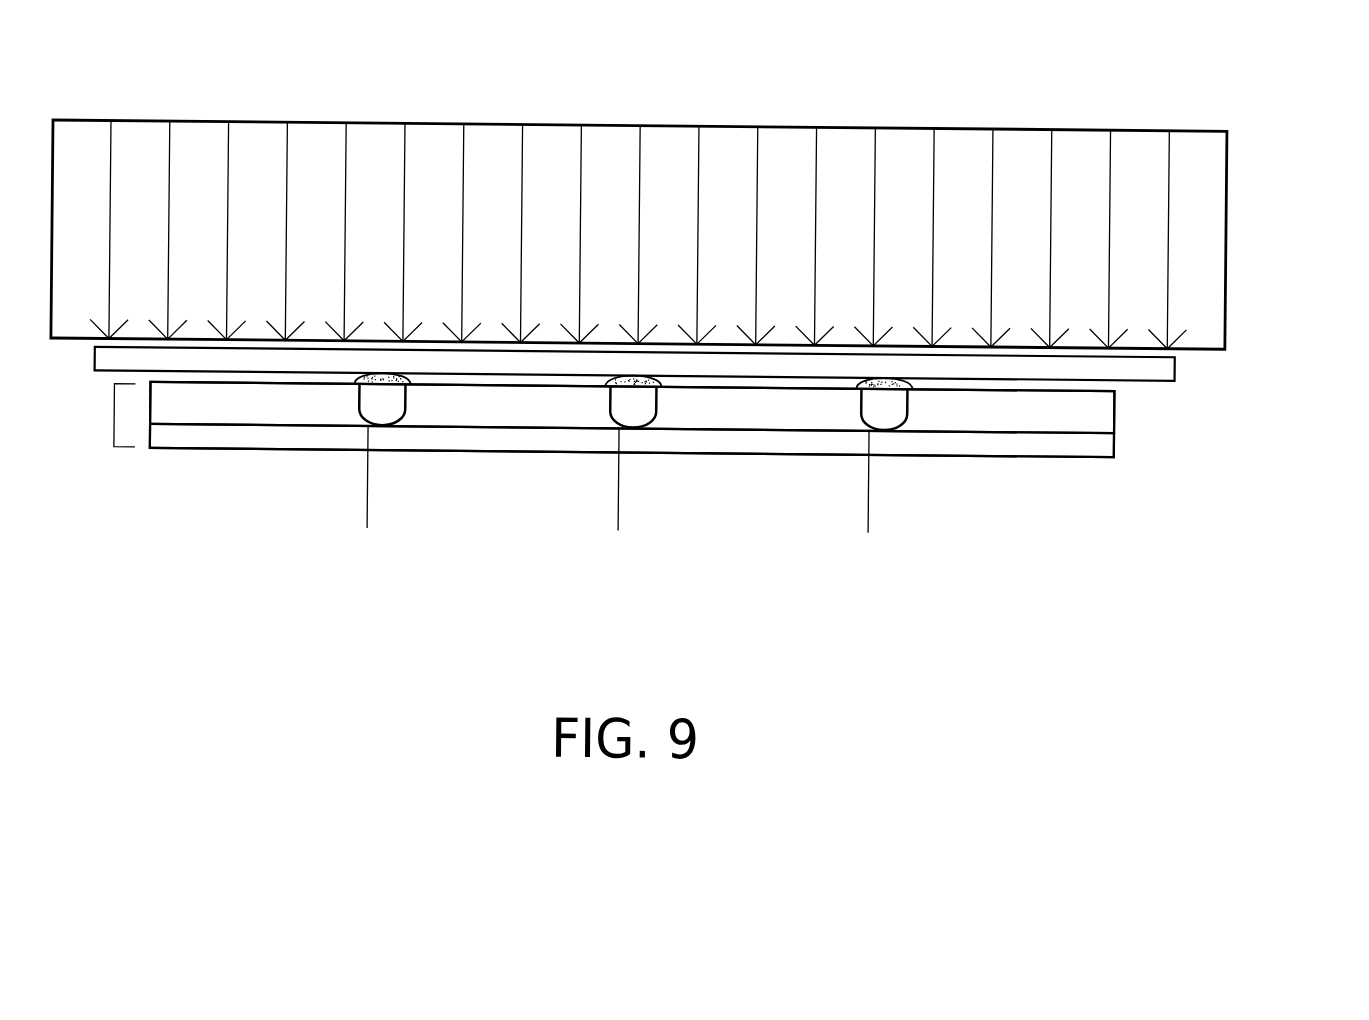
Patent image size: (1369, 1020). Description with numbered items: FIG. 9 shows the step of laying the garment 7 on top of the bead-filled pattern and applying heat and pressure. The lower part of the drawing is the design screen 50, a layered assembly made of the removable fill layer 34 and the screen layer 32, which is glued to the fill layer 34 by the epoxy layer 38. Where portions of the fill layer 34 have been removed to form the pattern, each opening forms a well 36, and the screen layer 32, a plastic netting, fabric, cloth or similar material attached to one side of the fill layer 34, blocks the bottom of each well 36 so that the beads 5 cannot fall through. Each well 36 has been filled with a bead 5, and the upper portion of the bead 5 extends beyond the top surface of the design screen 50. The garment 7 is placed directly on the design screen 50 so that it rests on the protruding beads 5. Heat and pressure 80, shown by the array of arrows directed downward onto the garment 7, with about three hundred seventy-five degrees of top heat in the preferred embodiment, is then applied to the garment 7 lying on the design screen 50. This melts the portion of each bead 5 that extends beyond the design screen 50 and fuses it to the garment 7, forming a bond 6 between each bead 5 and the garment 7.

The heat and pressure 80 is at (1187, 231).
The garment 7 is at (1135, 360).
The fill layer 34 is at (1092, 398).
The epoxy layer 38 is at (1128, 433).
The screen layer 32 is at (1090, 436).
The design screen 50 is at (117, 414).
The bead 5 is at (933, 497).
The bond 6 is at (864, 381).
The well 36 is at (872, 525).